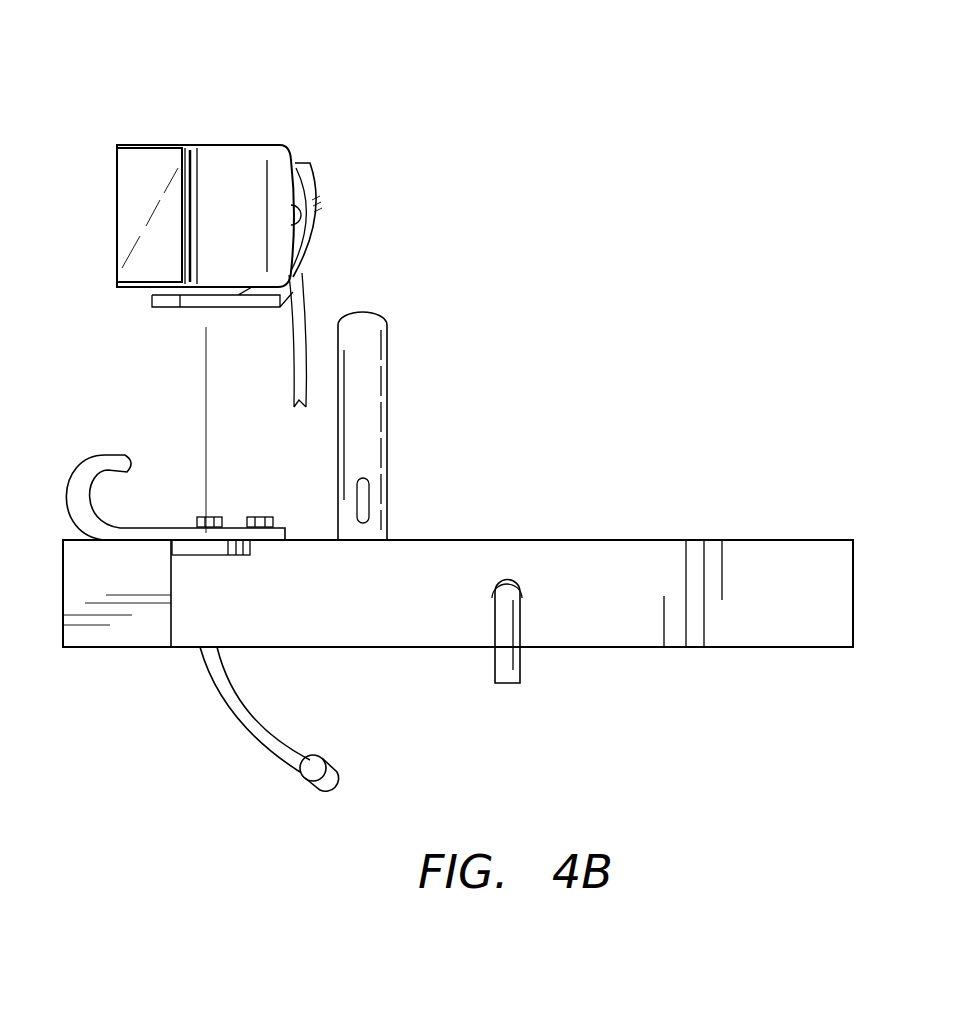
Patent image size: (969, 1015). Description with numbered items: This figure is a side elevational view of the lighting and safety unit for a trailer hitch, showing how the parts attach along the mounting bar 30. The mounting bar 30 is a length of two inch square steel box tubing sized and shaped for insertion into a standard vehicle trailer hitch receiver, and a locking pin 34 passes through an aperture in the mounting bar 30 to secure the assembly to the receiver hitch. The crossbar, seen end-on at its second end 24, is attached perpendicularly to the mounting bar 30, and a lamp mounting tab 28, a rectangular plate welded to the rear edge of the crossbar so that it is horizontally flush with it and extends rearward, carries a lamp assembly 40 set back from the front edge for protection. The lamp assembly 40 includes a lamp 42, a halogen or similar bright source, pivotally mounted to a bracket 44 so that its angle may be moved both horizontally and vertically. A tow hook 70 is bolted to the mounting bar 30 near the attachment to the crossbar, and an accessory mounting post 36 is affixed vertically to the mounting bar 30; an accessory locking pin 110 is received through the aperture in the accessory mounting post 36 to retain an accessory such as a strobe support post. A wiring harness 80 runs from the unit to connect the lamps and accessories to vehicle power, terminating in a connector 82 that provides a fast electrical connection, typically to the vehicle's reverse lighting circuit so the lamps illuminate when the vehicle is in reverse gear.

The second end 24 is at (148, 647).
The lamp mounting tab 28 is at (222, 555).
The mounting bar 30 is at (768, 540).
The locking pin 34 is at (521, 663).
The accessory mounting post 36 is at (387, 420).
The lamp assembly 40 is at (260, 145).
The lamp 42 is at (163, 145).
The bracket 44 is at (317, 180).
The tow hook 70 is at (102, 455).
The wiring harness 80 is at (247, 717).
The connector 82 is at (293, 772).
The accessory locking pin 110 is at (372, 507).